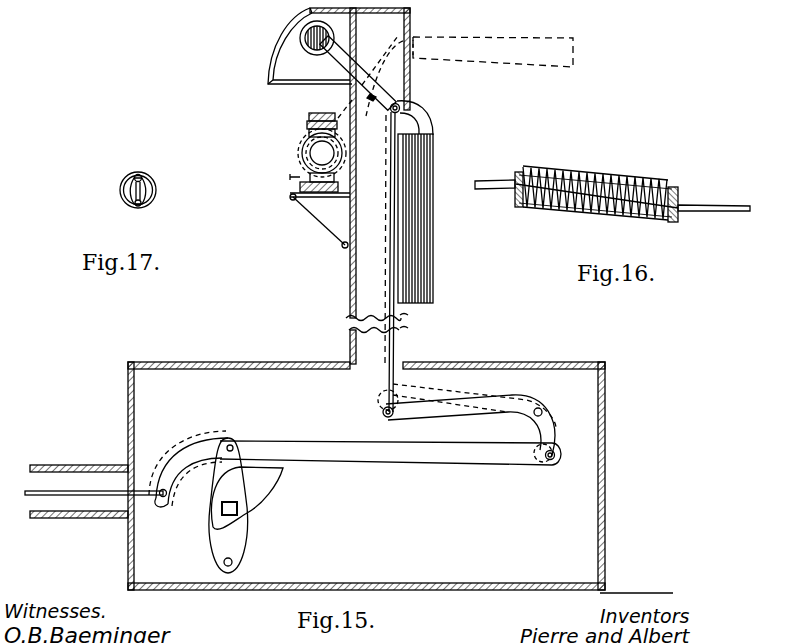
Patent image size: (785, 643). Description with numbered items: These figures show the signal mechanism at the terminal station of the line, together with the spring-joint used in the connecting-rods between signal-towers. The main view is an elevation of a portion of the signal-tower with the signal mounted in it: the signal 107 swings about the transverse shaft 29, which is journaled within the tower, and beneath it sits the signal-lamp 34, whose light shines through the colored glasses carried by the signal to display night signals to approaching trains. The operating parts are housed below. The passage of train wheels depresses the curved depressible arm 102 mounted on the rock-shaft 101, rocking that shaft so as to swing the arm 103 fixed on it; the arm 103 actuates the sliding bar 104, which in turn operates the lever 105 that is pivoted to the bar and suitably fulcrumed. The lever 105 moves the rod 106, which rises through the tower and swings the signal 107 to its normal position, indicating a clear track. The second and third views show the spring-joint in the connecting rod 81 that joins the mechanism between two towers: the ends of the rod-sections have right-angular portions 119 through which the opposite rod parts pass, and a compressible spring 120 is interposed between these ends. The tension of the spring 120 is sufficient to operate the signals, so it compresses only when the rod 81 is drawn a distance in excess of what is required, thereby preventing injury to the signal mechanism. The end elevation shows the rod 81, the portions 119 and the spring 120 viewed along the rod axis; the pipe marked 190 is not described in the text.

In FIG. 15, the transverse shaft 29 is at (352, 93).
In FIG. 15, the signal-lamp 34 is at (299, 153).
In FIG. 16, the rod 81 is at (484, 180).
In FIG. 17, the rod 81 is at (147, 177).
In FIG. 15, the rock-shaft 101 is at (238, 508).
In FIG. 15, the curved depressible arm 102 is at (280, 474).
In FIG. 15, the arm 103 is at (237, 547).
In FIG. 15, the sliding bar 104 is at (397, 456).
In FIG. 15, the lever 105 is at (488, 418).
In FIG. 15, the rod 106 is at (386, 390).
In FIG. 15, the signal 107 is at (419, 110).
In FIG. 16, the right-angular portions 119 is at (521, 172).
In FIG. 17, the right-angular portions 119 is at (138, 173).
In FIG. 16, the compressible spring 120 is at (617, 178).
In FIG. 17, the compressible spring 120 is at (122, 195).
In FIG. 15, the pipe 190 is at (90, 491).